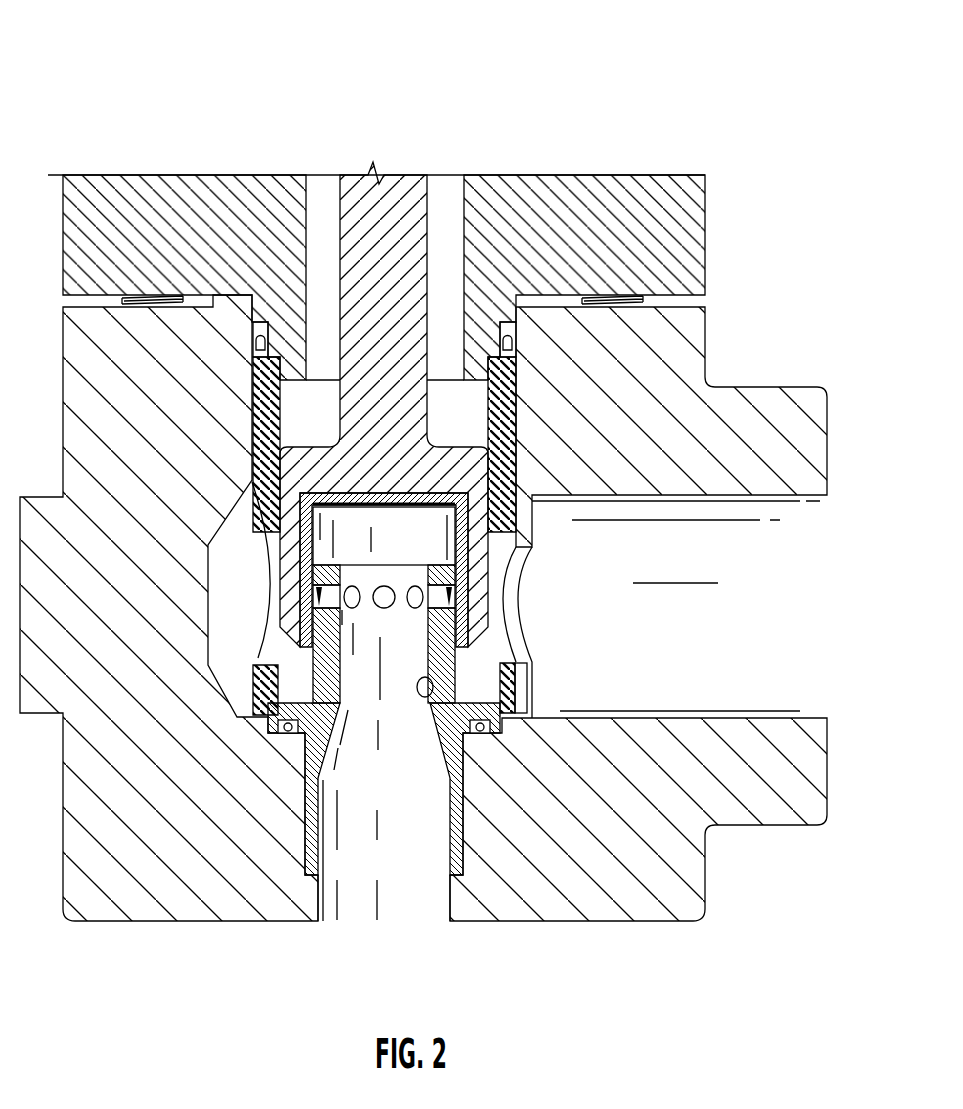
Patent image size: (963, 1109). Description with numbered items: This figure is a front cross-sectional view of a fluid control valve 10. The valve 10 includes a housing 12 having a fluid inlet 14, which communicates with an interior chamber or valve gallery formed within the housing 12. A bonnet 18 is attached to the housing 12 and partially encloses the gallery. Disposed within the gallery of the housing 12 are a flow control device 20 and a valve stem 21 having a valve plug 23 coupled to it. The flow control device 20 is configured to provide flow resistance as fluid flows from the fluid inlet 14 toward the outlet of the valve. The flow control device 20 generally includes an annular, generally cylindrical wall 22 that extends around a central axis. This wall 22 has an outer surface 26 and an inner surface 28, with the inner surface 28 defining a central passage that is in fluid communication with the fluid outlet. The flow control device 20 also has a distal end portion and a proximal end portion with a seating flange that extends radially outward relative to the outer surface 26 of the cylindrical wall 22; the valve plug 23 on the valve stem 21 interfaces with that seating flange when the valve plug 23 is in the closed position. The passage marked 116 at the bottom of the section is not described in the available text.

The fluid control valve 10 is at (59, 101).
The housing 12 is at (150, 897).
The fluid inlet 14 is at (766, 622).
The bonnet 18 is at (566, 207).
The flow control device 20 is at (444, 742).
The valve stem 21 is at (399, 238).
The cylindrical wall 22 is at (312, 667).
The valve plug 23 is at (270, 578).
The outer surface 26 is at (458, 672).
The inner surface 28 is at (435, 692).
The outlet bore 116 is at (406, 902).